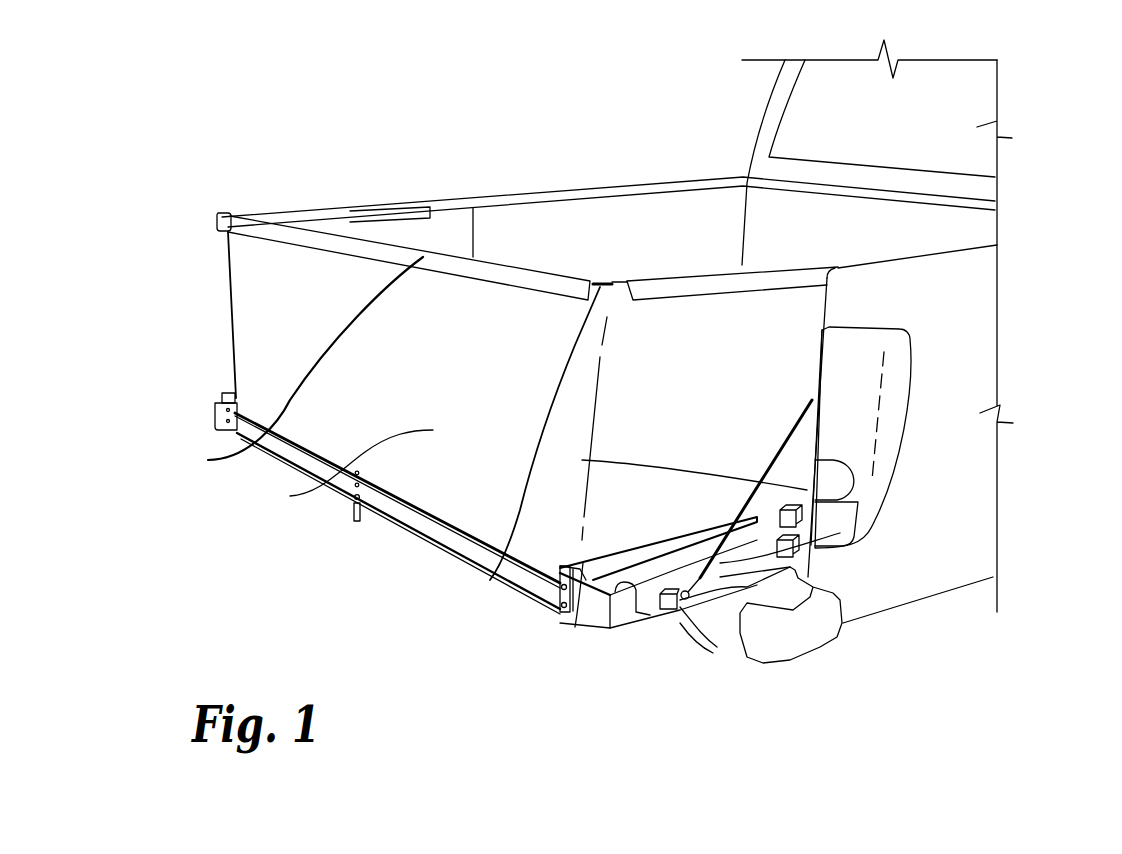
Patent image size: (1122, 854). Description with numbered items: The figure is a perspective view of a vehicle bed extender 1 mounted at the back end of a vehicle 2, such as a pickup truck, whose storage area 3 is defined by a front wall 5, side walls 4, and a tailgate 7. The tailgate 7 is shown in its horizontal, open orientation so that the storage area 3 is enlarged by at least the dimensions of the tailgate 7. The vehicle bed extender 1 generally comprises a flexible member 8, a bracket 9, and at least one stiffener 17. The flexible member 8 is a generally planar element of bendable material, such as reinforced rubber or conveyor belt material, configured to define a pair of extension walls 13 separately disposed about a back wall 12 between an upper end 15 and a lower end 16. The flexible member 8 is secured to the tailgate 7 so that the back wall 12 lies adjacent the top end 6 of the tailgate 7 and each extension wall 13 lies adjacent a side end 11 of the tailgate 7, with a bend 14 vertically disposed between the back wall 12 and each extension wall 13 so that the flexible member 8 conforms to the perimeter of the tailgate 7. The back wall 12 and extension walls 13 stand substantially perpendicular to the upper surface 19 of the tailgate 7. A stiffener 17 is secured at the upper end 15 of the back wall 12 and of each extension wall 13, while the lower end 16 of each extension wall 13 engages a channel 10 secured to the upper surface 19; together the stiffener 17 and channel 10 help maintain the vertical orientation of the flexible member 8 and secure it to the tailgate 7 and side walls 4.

The vehicle bed extender 1 is at (188, 210).
The vehicle 2 is at (738, 104).
The storage area 3 is at (753, 230).
The side walls 4 is at (495, 202).
The front wall 5 is at (907, 220).
The top end 6 is at (602, 618).
The tailgate 7 is at (755, 572).
The flexible member 8 is at (230, 318).
The bracket 9 is at (430, 530).
The channel 10 is at (228, 405).
The side end 11 is at (718, 577).
The back wall 12 is at (397, 500).
The extension walls 13 is at (390, 230).
The bend 14 is at (228, 272).
The upper end 15 is at (502, 568).
The lower end 16 is at (603, 612).
The stiffener 17 is at (292, 213).
The upper surface 19 is at (623, 590).